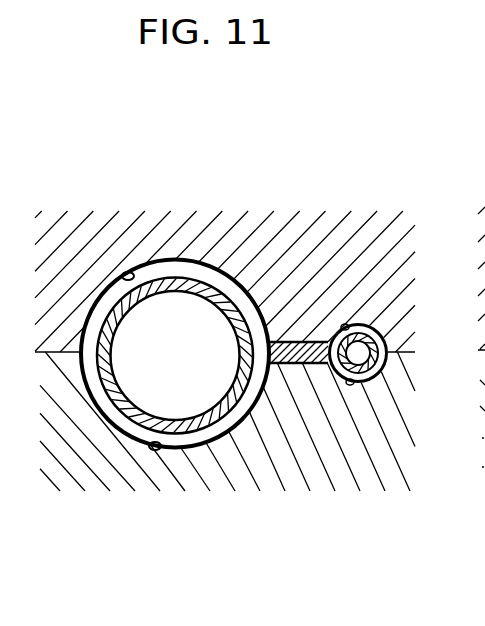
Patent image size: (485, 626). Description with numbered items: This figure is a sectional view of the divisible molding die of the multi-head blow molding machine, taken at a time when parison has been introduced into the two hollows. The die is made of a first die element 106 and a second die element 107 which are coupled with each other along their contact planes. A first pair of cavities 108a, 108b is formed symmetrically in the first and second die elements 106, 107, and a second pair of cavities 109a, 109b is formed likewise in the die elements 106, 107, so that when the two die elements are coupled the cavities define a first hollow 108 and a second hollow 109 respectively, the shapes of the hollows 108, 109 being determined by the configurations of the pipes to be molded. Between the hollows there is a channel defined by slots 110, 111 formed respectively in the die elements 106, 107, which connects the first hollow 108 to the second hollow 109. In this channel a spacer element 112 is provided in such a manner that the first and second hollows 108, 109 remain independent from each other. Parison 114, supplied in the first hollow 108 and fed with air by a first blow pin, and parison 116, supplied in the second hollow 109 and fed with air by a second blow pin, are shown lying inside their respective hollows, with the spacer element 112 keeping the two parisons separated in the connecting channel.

The first die element 106 is at (252, 240).
The second die element 107 is at (88, 458).
The first hollow 108 is at (95, 307).
The first cavity of first pair 108a is at (122, 274).
The second cavity of first pair 108b is at (156, 449).
The second hollow 109 is at (383, 381).
The first cavity of second pair 109a is at (344, 326).
The second cavity of second pair 109b is at (357, 384).
The slot 110 is at (293, 342).
The slot 111 is at (289, 366).
The spacer element 112 is at (278, 368).
The parison 114 is at (178, 278).
The parison 116 is at (368, 327).